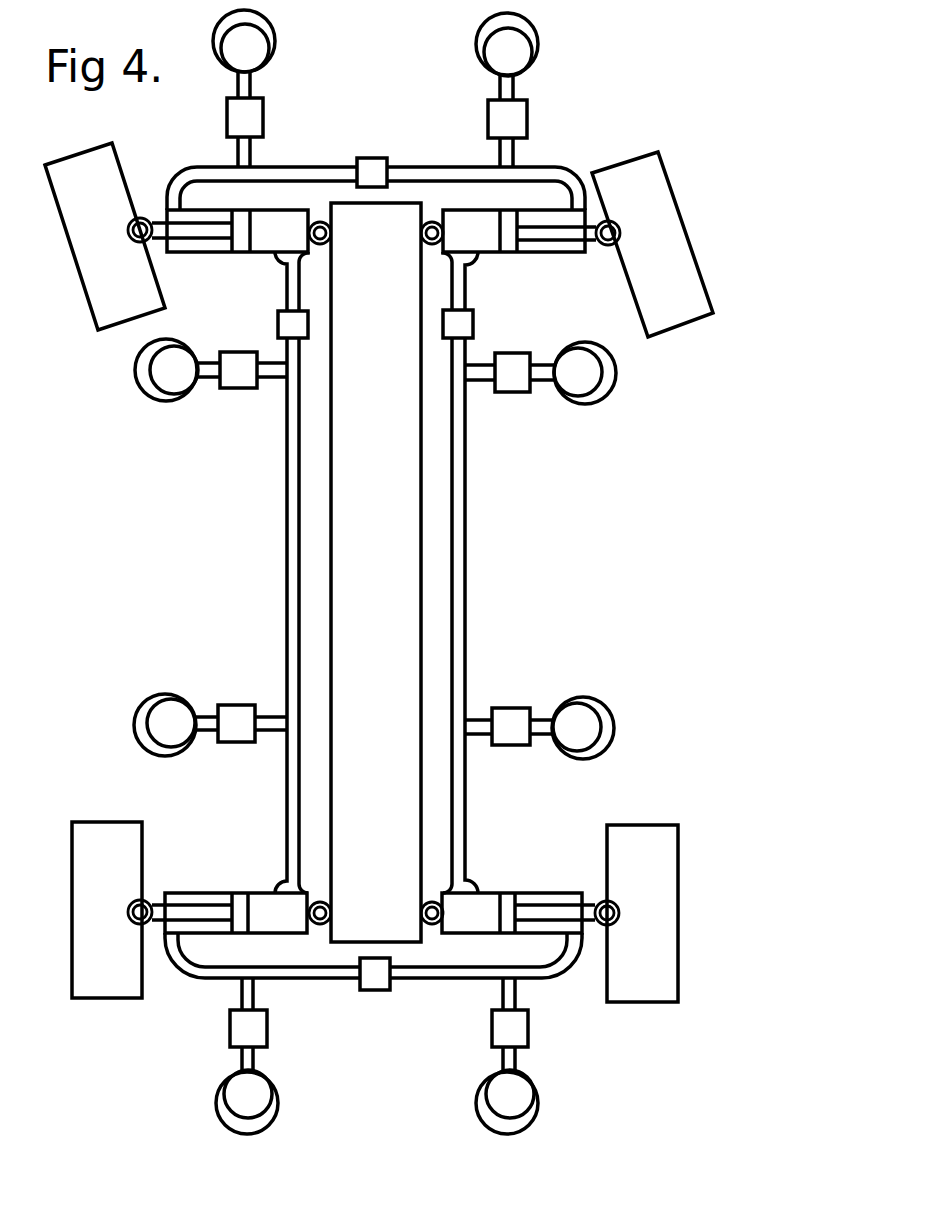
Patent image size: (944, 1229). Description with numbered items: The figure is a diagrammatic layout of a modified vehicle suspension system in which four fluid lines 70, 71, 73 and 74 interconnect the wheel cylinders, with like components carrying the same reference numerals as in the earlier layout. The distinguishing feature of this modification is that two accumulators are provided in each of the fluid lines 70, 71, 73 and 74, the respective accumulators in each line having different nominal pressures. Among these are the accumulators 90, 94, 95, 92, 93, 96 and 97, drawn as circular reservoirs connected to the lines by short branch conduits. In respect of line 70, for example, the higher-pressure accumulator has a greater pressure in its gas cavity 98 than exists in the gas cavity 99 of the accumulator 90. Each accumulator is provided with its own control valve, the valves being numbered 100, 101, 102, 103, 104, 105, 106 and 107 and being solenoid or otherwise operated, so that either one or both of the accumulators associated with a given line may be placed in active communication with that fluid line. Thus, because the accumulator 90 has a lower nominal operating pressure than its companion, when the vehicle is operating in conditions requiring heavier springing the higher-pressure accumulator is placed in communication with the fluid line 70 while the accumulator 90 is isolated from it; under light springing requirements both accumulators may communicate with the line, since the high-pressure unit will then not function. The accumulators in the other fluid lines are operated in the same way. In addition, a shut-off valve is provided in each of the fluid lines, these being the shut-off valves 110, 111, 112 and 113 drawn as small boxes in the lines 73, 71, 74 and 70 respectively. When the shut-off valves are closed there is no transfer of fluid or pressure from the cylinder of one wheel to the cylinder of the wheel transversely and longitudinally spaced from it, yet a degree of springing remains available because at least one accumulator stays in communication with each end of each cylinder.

The fluid line 70 is at (285, 542).
The fluid line 71 is at (465, 525).
The fluid line 73 is at (190, 180).
The fluid line 74 is at (323, 980).
The accumulator 90 is at (304, 572).
The accumulator 92 is at (275, 40).
The accumulator 93 is at (538, 45).
The accumulator 94 is at (610, 392).
The accumulator 95 is at (613, 733).
The accumulator 96 is at (538, 1098).
The accumulator 97 is at (273, 1095).
The gas cavity 98 is at (140, 390).
The gas cavity 99 is at (137, 740).
The control valve 100 is at (238, 390).
The control valve 101 is at (265, 117).
The control valve 102 is at (527, 107).
The control valve 103 is at (520, 393).
The control valve 104 is at (508, 747).
The control valve 105 is at (528, 1033).
The control valve 106 is at (243, 1023).
The control valve 107 is at (230, 743).
The shut-off valve 110 is at (373, 157).
The shut-off valve 111 is at (473, 323).
The shut-off valve 112 is at (388, 990).
The shut-off valve 113 is at (277, 315).